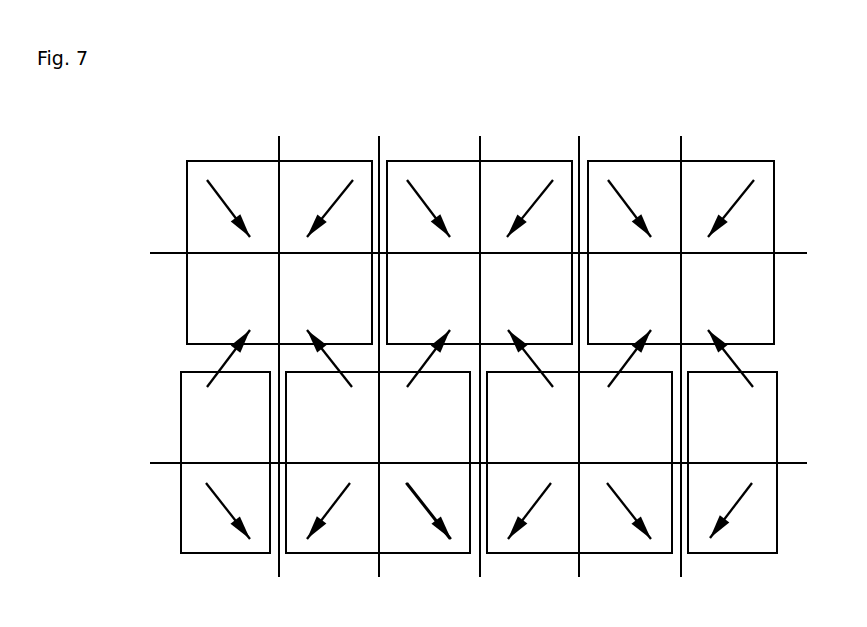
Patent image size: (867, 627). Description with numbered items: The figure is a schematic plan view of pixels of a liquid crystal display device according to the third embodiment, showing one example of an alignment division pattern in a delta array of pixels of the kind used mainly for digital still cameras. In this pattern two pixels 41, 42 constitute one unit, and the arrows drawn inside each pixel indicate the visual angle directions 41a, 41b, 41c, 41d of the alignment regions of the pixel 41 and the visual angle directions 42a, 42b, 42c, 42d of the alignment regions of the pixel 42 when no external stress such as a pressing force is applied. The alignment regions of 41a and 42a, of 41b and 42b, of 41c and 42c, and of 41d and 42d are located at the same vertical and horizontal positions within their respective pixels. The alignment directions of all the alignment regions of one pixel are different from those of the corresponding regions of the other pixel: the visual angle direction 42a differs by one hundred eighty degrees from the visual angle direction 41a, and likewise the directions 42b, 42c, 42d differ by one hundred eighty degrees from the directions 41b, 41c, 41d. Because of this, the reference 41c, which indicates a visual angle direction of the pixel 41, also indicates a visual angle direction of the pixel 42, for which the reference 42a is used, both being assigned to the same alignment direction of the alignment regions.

The pixel 41 is at (185, 288).
The visual angle direction of alignment region 41a is at (220, 203).
The visual angle direction of alignment region 41b is at (338, 195).
The visual angle direction of alignment region 41c is at (395, 381).
The visual angle direction of alignment region 41d is at (222, 364).
The pixel 42 is at (300, 557).
The visual angle direction of alignment region 42a is at (332, 363).
The visual angle direction of alignment region 42b is at (407, 383).
The visual angle direction of alignment region 42c is at (417, 497).
The visual angle direction of alignment region 42d is at (338, 540).